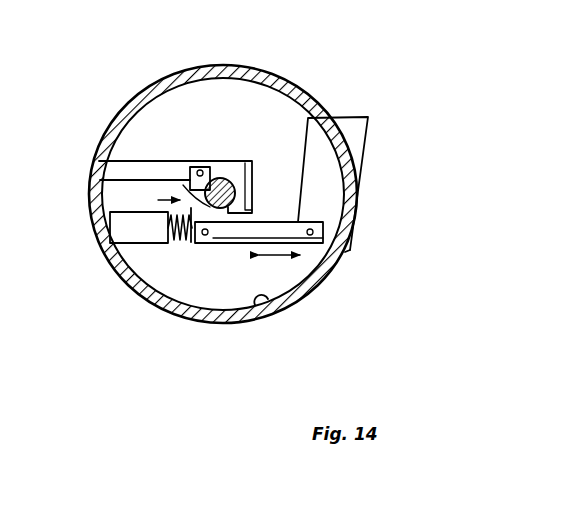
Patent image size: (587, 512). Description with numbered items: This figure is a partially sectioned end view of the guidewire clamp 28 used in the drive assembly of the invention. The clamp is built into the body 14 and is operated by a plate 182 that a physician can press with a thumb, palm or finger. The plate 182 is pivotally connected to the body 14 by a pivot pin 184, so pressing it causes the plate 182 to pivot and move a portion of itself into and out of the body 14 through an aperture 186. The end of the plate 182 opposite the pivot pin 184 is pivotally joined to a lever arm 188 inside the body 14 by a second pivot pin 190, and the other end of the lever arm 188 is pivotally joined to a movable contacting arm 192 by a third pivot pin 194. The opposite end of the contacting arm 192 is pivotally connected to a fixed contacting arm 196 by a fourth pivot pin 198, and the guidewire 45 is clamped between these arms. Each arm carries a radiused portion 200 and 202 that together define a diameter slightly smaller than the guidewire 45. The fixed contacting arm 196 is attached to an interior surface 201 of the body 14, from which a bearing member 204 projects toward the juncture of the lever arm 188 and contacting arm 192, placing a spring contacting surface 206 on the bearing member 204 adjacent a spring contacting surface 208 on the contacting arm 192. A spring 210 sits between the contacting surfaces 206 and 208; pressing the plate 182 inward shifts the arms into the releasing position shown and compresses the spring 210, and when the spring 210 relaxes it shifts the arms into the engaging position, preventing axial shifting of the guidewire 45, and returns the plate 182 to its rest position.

The body 14 is at (305, 95).
The guidewire clamp 28 is at (375, 145).
The guidewire 45 is at (222, 161).
The plate 182 is at (355, 132).
The pivot pin 184 is at (322, 110).
The aperture 186 is at (362, 217).
The lever arm 188 is at (288, 222).
The second pivot pin 190 is at (345, 250).
The movable contacting arm 192 is at (108, 232).
The third pivot pin 194 is at (210, 245).
The fixed contacting arm 196 is at (236, 161).
The fourth pivot pin 198 is at (200, 167).
The radiused portion 200 is at (183, 161).
The interior surface 201 is at (263, 318).
The radiused portion 202 is at (247, 161).
The bearing member 204 is at (130, 243).
The spring contacting surface 206 is at (160, 198).
The spring contacting surface 208 is at (180, 241).
The spring 210 is at (143, 298).